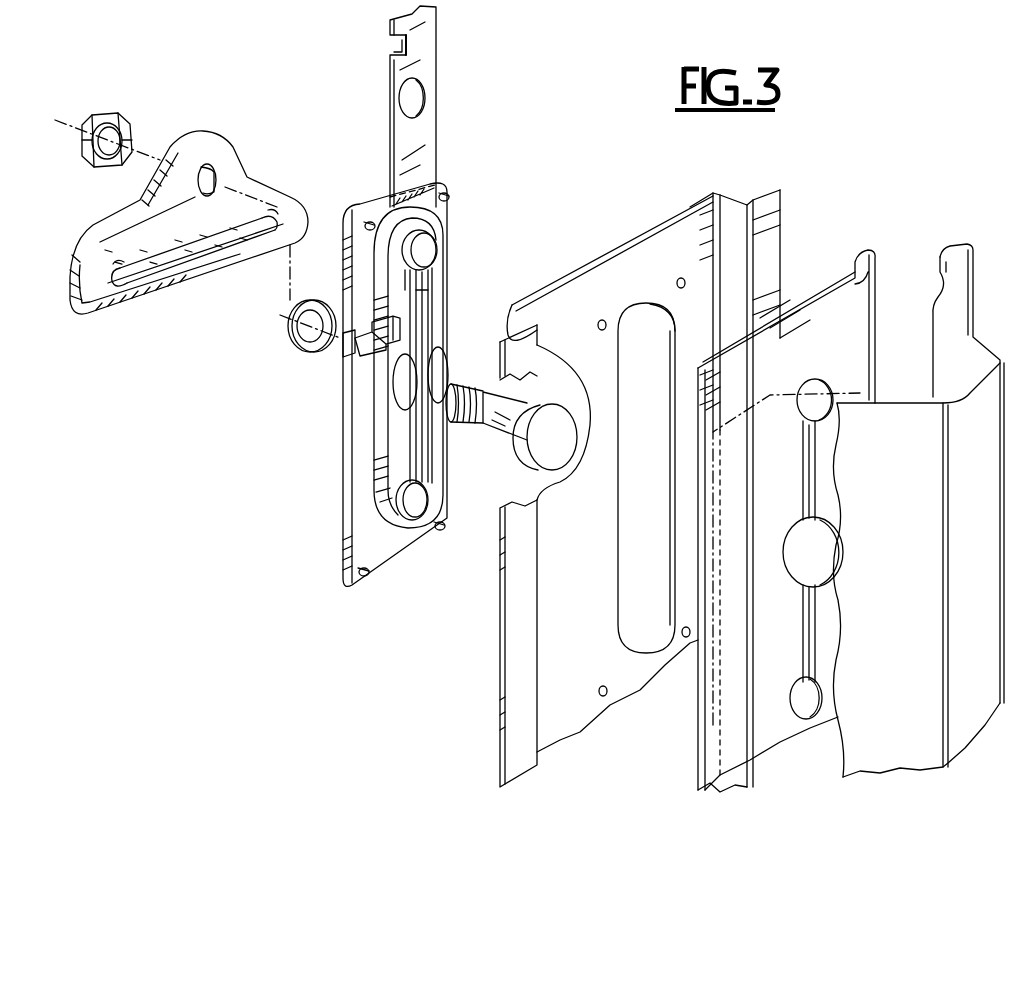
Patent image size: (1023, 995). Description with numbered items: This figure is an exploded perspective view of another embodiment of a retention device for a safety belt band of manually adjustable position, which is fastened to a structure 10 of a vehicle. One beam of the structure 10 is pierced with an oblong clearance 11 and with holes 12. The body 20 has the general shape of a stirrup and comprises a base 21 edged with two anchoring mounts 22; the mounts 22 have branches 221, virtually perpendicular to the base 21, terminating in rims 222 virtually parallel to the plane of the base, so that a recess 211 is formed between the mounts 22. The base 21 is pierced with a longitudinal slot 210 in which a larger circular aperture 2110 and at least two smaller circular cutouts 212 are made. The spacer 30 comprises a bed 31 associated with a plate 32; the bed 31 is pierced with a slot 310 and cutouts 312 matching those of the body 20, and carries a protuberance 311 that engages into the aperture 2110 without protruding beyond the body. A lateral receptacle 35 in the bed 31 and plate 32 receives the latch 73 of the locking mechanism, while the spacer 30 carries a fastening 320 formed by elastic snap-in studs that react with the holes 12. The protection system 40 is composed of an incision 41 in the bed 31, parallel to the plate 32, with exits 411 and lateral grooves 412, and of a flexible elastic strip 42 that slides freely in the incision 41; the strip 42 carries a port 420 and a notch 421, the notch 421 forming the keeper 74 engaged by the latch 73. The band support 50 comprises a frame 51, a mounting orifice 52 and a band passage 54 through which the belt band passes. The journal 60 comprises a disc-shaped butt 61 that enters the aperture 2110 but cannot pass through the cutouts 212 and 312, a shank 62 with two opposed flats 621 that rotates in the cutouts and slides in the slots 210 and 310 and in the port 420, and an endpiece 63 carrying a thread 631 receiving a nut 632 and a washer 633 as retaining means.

The structure 10 is at (773, 207).
The oblong clearance 11 is at (646, 478).
The holes 12 is at (605, 320).
The body 20 is at (895, 250).
The base 21 is at (860, 310).
The anchoring mounts 22 is at (848, 255).
The recess 211 is at (795, 320).
The branches 221 is at (855, 280).
The rims 222 is at (862, 255).
The longitudinal slot 210 is at (812, 620).
The cutouts 212 is at (818, 402).
The aperture 2110 is at (825, 548).
The spacer 30 is at (340, 552).
The bed 31 is at (378, 497).
The plate 32 is at (344, 585).
The lateral receptacle 35 is at (375, 336).
The slot 310 is at (410, 288).
The protuberance 311 is at (403, 397).
The cutouts 312 is at (424, 247).
The fastening 320 is at (368, 223).
The protection system 40 is at (483, 110).
The incision 41 is at (432, 238).
The strip 42 is at (425, 32).
The exits 411 is at (395, 210).
The lateral grooves 412 is at (417, 294).
The port 420 is at (415, 95).
The notch 421 is at (400, 48).
The band support 50 is at (82, 222).
The frame 51 is at (105, 308).
The mounting orifice 52 is at (218, 172).
The band passage 54 is at (147, 273).
The journal 60 is at (522, 385).
The butt 61 is at (546, 437).
The shank 62 is at (520, 406).
The endpiece 63 is at (466, 420).
The flats 621 is at (512, 428).
The thread 631 is at (470, 385).
The nut 632 is at (120, 120).
The washer 633 is at (290, 357).
The latch 73 is at (388, 352).
The keeper 74 is at (386, 58).